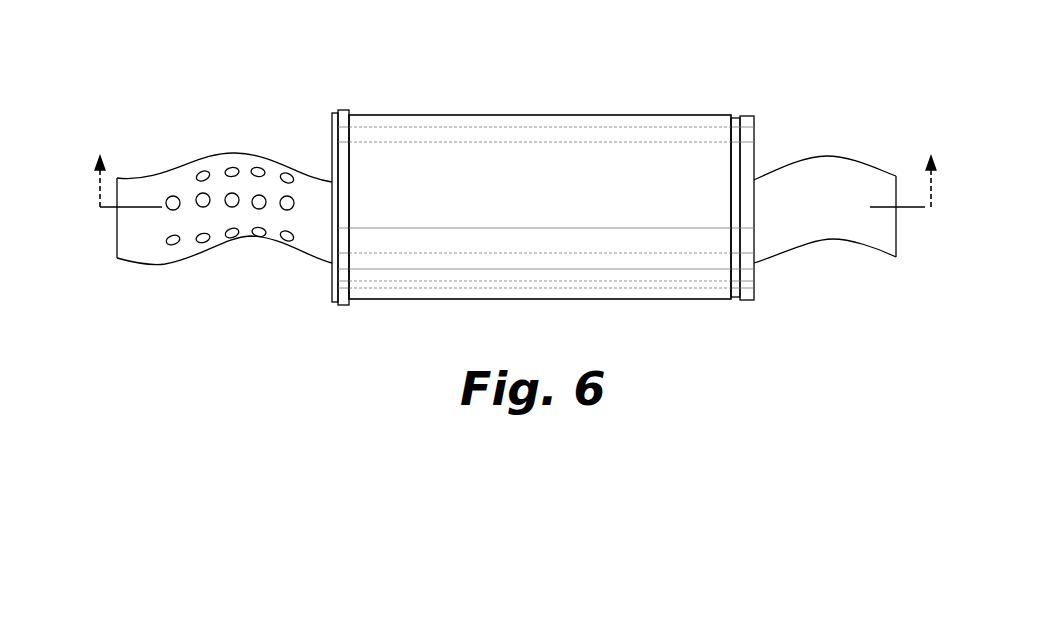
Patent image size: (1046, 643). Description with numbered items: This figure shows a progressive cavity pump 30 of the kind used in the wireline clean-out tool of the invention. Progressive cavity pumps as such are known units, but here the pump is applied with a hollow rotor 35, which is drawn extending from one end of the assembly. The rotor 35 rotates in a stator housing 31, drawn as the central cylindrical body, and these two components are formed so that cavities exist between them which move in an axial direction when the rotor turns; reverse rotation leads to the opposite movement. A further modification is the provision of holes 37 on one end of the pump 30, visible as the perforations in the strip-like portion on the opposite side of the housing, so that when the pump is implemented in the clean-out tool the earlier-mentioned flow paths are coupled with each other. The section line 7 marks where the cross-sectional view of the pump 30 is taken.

The progressive cavity pump 30 is at (305, 90).
The stator housing 31 is at (543, 140).
The hollow rotor 35 is at (812, 230).
The holes 37 is at (307, 275).
The section line 7- 7 is at (514, 210).